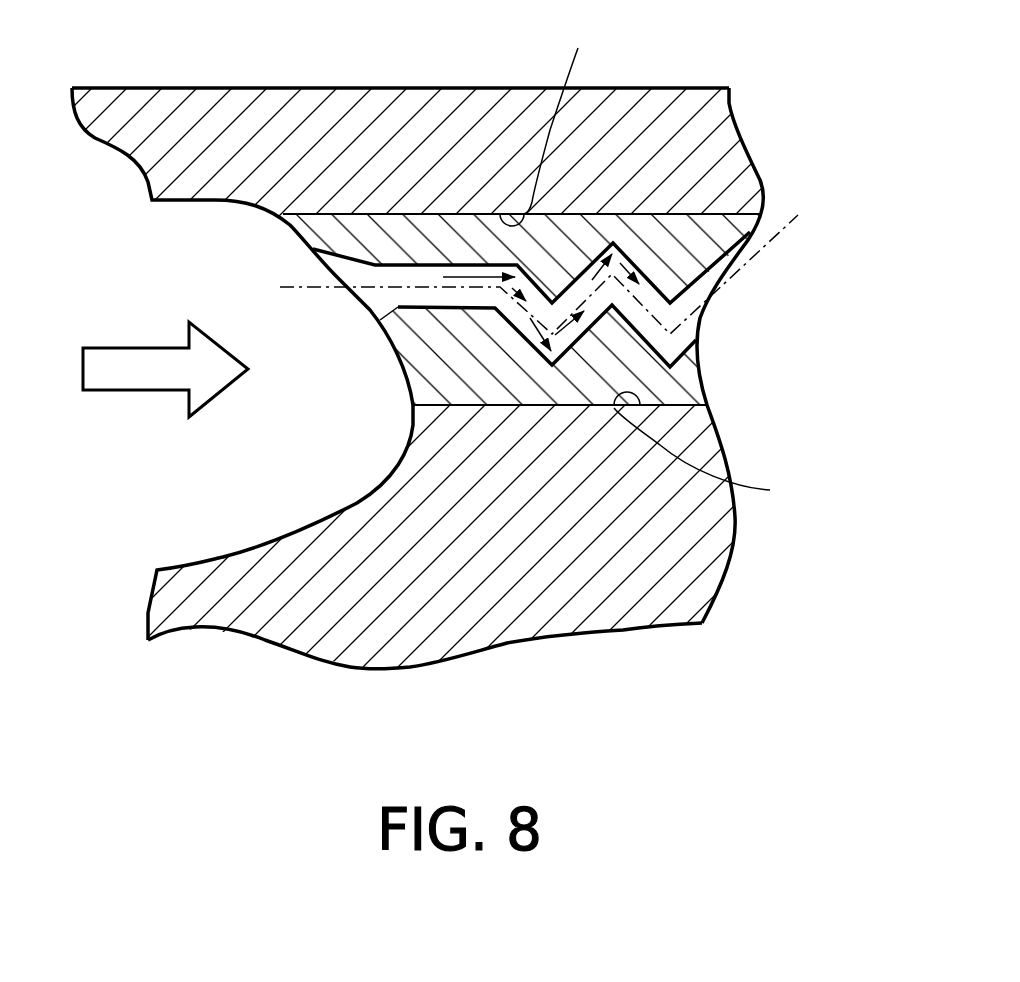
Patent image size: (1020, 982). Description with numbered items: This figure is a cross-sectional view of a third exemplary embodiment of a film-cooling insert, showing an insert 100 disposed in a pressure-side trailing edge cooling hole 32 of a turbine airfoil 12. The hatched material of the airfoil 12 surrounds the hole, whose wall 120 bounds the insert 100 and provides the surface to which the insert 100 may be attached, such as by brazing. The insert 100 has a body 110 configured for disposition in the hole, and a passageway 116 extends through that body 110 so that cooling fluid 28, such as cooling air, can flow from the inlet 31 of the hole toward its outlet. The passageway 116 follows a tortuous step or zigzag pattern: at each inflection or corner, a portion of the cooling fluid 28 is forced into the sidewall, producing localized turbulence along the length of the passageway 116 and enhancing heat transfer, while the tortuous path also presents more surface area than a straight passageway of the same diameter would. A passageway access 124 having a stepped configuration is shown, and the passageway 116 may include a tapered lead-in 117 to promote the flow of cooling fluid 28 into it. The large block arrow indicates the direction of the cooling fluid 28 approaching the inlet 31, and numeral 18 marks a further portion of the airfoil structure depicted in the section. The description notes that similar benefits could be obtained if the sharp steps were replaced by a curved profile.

The turbine airfoil 12 is at (729, 562).
The bottom surface 18 is at (680, 602).
The cooling fluid 28 is at (466, 268).
The inlet 31 is at (315, 250).
The trailing edge cooling hole 32 is at (386, 346).
The film-cooling hole insert 100 is at (662, 208).
The insert body 110 is at (677, 398).
The passageway 116 is at (697, 343).
The tapered lead-in 117 is at (343, 257).
The wall of the film-cooling hole 120 is at (657, 262).
The passageway access 124 is at (750, 258).